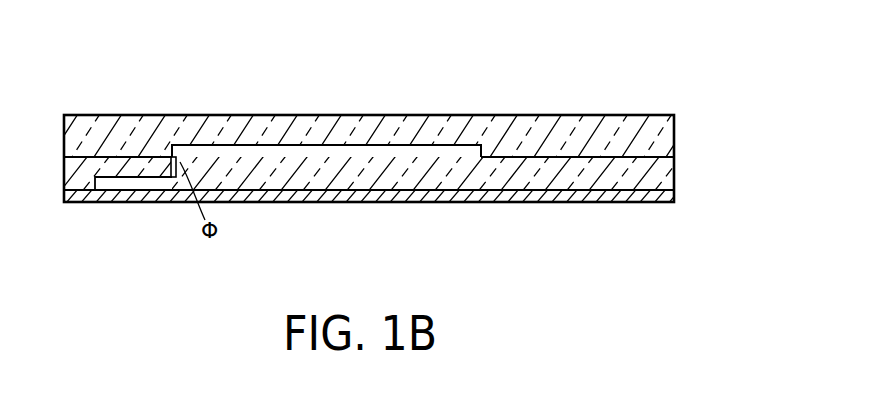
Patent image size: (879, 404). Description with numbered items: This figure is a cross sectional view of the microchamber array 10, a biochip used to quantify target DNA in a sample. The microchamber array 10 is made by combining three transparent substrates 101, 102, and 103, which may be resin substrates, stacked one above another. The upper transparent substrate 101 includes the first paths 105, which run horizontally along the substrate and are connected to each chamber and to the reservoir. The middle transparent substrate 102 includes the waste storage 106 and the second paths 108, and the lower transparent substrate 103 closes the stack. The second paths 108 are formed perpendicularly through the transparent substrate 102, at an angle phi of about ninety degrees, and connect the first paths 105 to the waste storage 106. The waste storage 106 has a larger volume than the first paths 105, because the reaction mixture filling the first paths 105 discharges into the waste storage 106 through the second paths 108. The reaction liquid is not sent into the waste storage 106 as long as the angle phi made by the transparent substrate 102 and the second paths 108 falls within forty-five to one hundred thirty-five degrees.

The microchamber array 10 is at (384, 160).
The transparent substrate 101 is at (675, 128).
The transparent substrate 102 is at (673, 175).
The transparent substrate 103 is at (657, 202).
The first paths 105 is at (367, 152).
The waste storage 106 is at (123, 186).
The second paths 108 is at (174, 182).